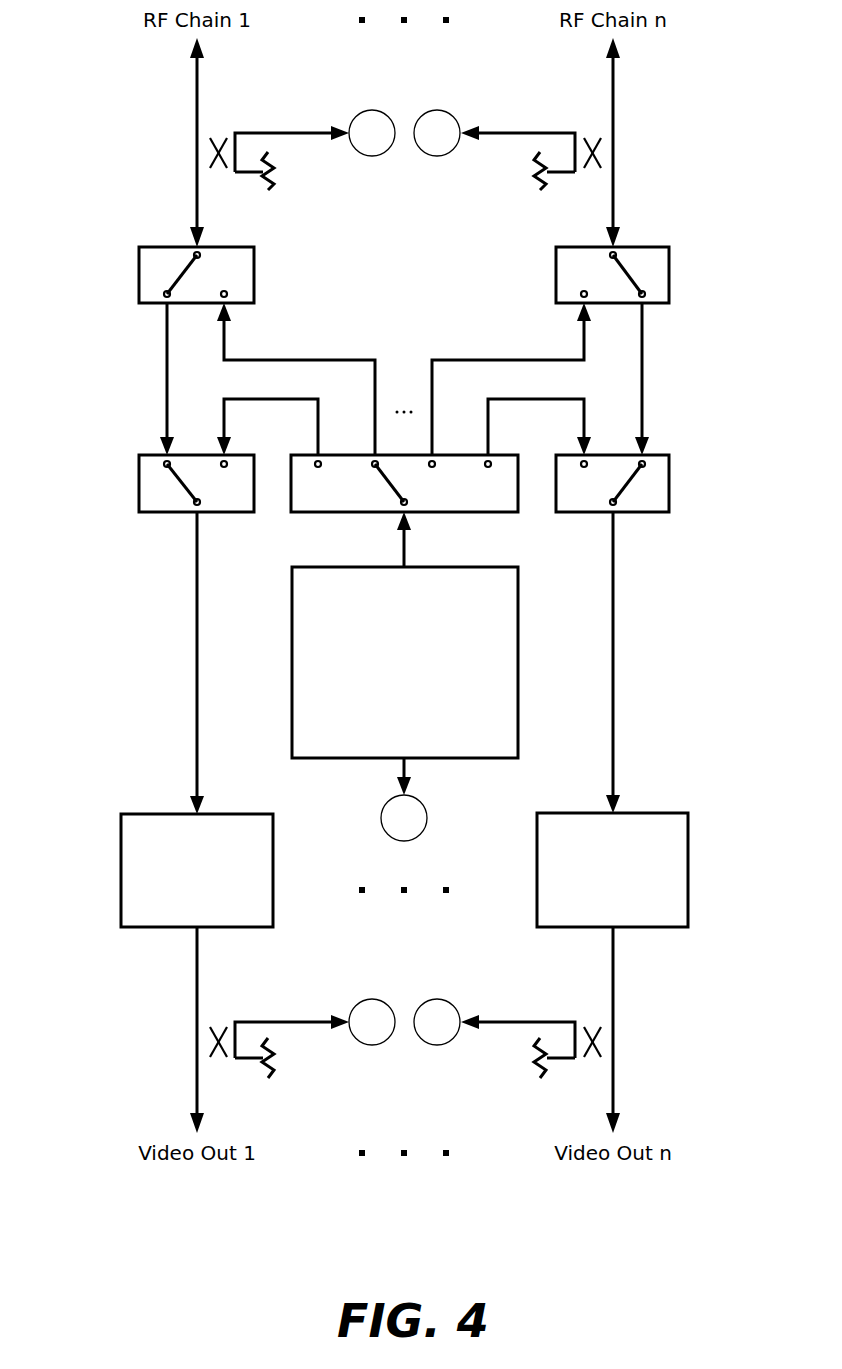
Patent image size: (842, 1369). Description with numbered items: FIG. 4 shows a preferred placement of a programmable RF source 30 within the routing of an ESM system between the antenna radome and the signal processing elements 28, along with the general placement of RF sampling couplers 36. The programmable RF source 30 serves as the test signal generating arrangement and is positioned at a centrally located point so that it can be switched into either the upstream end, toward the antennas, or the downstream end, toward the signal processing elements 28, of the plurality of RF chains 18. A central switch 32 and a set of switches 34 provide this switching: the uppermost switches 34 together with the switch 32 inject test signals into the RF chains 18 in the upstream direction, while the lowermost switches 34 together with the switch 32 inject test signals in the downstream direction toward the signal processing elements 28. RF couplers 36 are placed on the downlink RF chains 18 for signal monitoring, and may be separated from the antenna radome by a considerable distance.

The RF chain 18 is at (660, 78).
The signal processing element 28 is at (725, 845).
The programmable RF source 30 is at (528, 647).
The switch 32 is at (524, 522).
The switch 34 is at (131, 270).
The RF coupler 36 is at (290, 132).